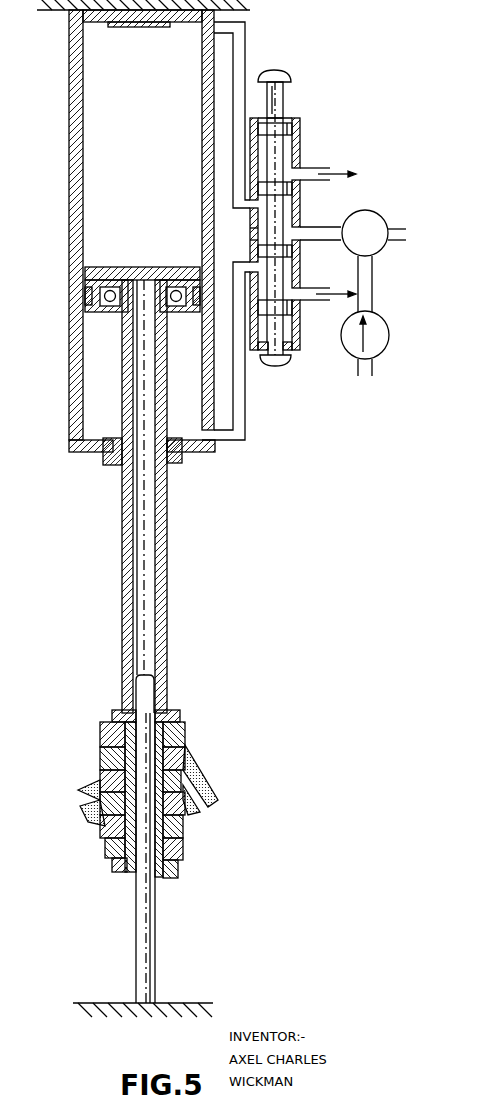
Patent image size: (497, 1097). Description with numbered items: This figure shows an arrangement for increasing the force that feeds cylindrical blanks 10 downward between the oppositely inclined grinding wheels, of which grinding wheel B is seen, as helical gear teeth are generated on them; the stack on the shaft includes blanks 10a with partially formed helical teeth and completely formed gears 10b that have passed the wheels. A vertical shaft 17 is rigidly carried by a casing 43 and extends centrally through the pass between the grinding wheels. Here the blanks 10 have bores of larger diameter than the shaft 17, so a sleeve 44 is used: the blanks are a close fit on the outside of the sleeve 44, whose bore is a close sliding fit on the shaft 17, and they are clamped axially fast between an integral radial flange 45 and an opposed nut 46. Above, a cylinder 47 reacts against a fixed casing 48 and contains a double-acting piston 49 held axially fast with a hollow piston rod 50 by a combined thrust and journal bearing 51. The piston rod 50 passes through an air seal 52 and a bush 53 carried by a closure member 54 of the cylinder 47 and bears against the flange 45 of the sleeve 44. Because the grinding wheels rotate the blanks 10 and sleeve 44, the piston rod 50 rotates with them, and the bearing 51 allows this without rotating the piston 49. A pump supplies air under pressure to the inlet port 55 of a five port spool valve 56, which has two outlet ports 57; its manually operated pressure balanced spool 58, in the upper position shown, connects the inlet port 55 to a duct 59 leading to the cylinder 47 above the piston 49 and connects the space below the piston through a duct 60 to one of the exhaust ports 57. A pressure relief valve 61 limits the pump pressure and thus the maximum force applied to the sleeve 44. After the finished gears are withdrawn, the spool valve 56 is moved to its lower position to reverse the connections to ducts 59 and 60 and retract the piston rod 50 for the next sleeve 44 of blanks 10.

The cylindrical blanks 10 is at (188, 731).
The blanks with partially formed helical teeth 10a is at (100, 812).
The completely formed gears 10b is at (106, 864).
The vertical shaft 17 is at (145, 930).
The casing 43 is at (122, 1012).
The sleeve 44 is at (171, 712).
The integral radial flange 45 is at (113, 712).
The nut 46 is at (180, 877).
The cylinder 47 is at (79, 118).
The fixed casing 48 is at (58, 12).
The double-acting piston 49 is at (106, 266).
The hollow piston rod 50 is at (163, 573).
The combined thrust and journal bearing 51 is at (108, 310).
The air seal 52 is at (104, 449).
The bush 53 is at (119, 463).
The closure member 54 is at (195, 449).
The inlet port 55 is at (307, 233).
The five port spool valve 56 is at (298, 333).
The outlet ports 57 is at (308, 167).
The manually operated pressure balanced spool 58 is at (250, 233).
The duct 59 is at (240, 131).
The duct 60 is at (239, 390).
The pressure relief valve 61 is at (381, 219).
The grinding wheel B is at (206, 772).